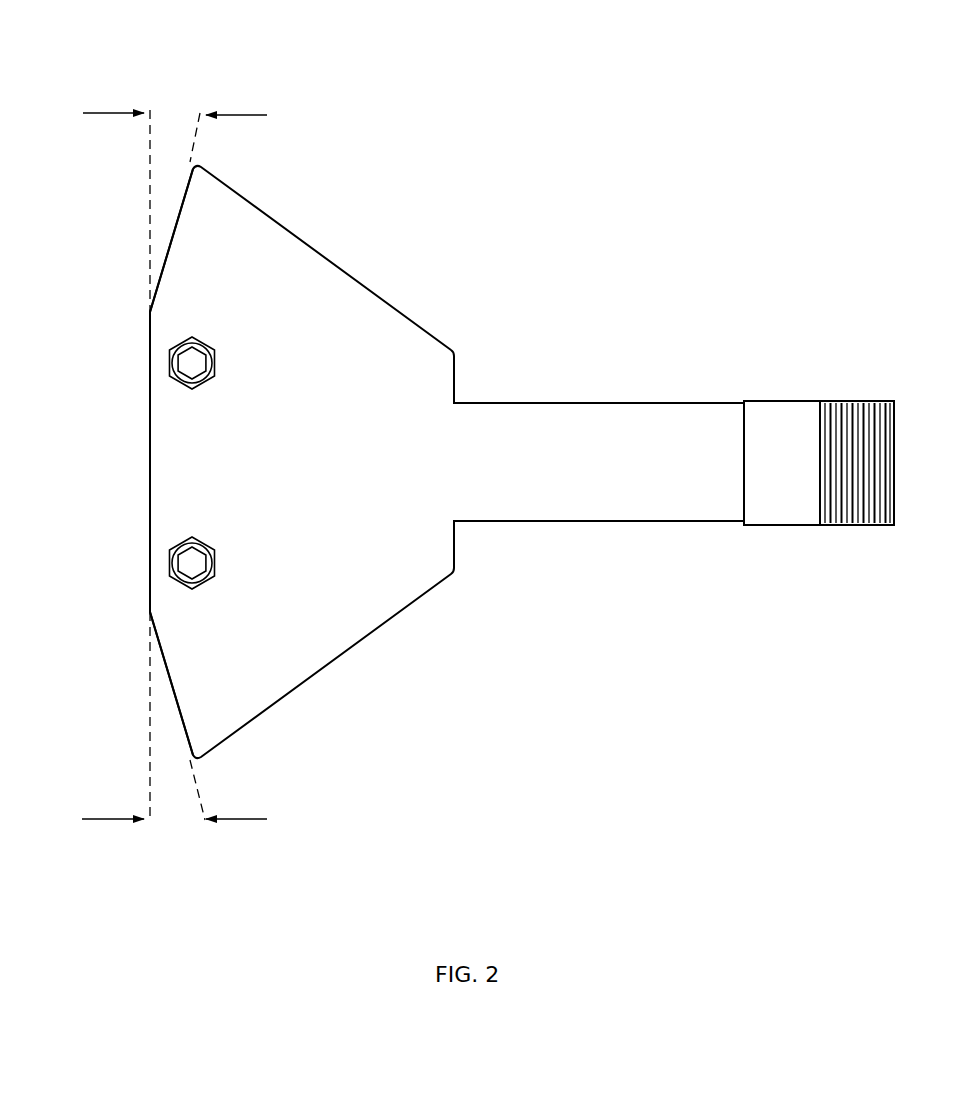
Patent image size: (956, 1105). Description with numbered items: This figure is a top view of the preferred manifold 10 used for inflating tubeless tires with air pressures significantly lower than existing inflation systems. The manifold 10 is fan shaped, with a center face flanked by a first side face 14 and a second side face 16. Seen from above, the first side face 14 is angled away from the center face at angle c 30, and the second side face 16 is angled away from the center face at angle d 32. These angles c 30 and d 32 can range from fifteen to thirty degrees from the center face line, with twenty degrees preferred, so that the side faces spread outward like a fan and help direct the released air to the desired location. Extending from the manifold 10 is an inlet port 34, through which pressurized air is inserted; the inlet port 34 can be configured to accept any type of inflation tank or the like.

The manifold 10 is at (467, 223).
The first side face 14 is at (170, 243).
The second side face 16 is at (165, 668).
The angle c 30 is at (182, 105).
The angle d 32 is at (183, 828).
The inlet port 34 is at (790, 399).